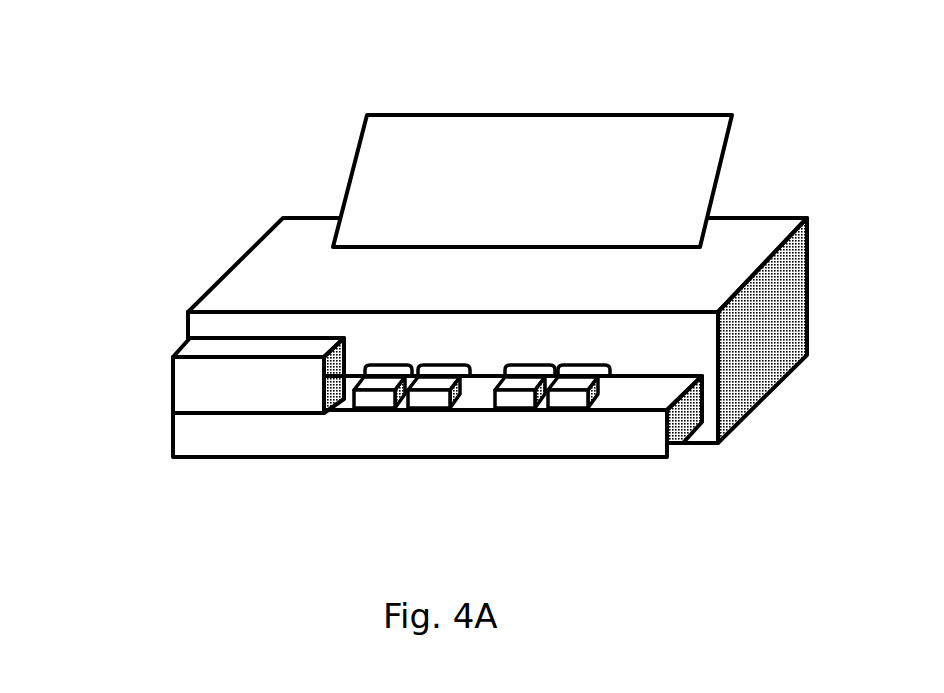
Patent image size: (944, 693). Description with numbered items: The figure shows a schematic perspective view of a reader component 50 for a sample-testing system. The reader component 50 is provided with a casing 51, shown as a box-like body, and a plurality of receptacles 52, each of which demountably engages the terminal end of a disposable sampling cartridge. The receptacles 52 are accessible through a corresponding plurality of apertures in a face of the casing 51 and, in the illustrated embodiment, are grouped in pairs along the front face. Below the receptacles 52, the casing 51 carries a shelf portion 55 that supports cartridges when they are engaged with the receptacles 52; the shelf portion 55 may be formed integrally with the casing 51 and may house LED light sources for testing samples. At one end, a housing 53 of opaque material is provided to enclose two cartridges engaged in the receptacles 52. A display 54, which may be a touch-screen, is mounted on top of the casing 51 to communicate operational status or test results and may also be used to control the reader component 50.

The reader component 50 is at (306, 85).
The casing 51 is at (233, 263).
The receptacles 52 is at (428, 397).
The housing 53 is at (197, 392).
The display 54 is at (408, 112).
The shelf portion 55 is at (278, 437).